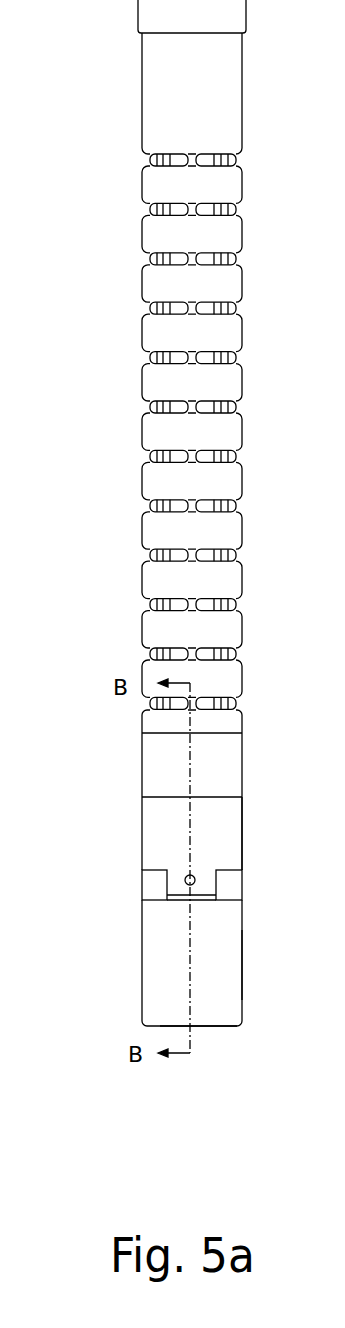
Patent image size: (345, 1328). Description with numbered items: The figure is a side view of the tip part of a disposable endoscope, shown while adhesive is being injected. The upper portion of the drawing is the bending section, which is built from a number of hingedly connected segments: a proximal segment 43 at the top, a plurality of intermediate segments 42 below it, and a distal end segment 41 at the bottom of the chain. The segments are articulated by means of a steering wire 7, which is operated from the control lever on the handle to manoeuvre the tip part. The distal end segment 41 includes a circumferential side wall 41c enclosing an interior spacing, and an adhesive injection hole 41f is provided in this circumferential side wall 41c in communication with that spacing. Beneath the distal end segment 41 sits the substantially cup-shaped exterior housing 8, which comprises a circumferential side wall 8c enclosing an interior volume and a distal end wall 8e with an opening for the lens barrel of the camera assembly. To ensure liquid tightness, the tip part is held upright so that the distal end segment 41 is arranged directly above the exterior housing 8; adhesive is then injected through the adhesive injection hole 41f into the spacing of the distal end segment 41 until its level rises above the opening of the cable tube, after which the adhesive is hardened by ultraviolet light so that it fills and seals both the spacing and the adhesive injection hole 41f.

The proximal segment 43 is at (240, 120).
The steering wire 7 is at (158, 555).
The intermediate segments 42 is at (242, 580).
The distal end segment 41 is at (141, 815).
The circumferential side wall 41c is at (240, 828).
The adhesive injection hole 41f is at (197, 882).
The exterior housing 8 is at (141, 957).
The circumferential side wall 8c is at (240, 965).
The distal end wall 8e is at (228, 1028).